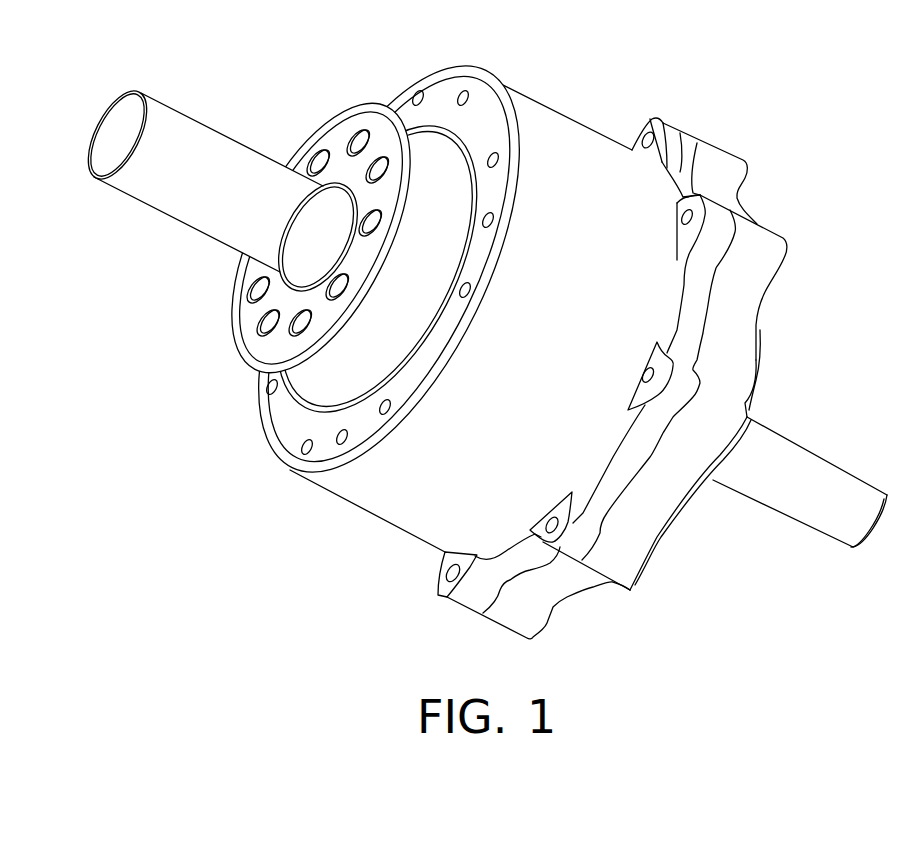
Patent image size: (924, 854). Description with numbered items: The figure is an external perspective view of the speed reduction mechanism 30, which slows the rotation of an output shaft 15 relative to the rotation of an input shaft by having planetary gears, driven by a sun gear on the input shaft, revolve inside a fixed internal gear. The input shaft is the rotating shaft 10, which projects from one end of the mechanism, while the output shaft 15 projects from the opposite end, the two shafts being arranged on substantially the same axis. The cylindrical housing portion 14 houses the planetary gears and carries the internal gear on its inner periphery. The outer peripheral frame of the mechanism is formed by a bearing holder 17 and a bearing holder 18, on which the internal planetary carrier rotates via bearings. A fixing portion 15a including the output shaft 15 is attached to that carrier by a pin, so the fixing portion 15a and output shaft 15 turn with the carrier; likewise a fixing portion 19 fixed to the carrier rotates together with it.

The speed reduction mechanism 30 is at (494, 43).
The rotating shaft 10 is at (850, 481).
The housing portion 14 is at (681, 143).
The output shaft 15 is at (205, 148).
The fixing portion 15a is at (357, 119).
The bearing holder 17 is at (586, 148).
The bearing holder 18 is at (724, 165).
The fixing portion 19 is at (760, 368).